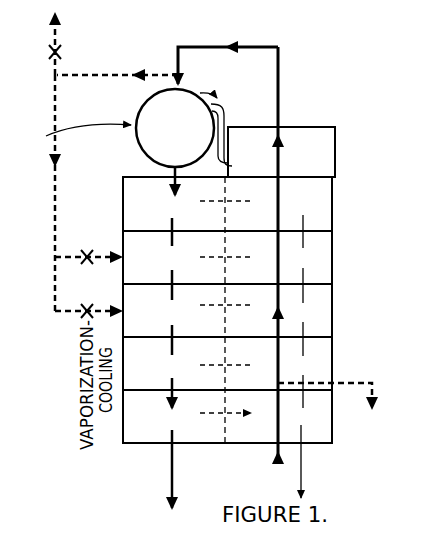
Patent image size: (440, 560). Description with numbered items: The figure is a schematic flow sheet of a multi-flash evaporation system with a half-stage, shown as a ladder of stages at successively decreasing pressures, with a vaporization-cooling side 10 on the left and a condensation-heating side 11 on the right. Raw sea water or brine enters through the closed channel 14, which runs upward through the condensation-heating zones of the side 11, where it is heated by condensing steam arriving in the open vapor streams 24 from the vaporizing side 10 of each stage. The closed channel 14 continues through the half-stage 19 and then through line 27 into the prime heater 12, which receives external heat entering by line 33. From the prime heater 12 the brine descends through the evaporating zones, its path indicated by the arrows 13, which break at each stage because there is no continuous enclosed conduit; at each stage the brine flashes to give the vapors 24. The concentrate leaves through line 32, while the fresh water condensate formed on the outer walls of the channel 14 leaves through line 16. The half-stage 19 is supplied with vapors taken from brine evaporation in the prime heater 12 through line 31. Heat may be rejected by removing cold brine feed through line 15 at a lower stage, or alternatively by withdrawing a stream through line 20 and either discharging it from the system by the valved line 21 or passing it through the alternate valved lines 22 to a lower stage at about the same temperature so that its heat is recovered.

The vaporization-cooling side 10 is at (123, 214).
The condensation-heating side 11 is at (331, 202).
The prime heater 12 is at (143, 128).
The descending brine arrows 13 is at (193, 185).
The closed brine channel 14 is at (278, 265).
The cold brine removal line 15 is at (374, 383).
The fresh water out line 16 is at (303, 230).
The half-stage 19 is at (334, 157).
The withdrawal line 20 is at (75, 75).
The valved heat reject line 21 is at (61, 38).
The alternate valved lines 22 is at (71, 260).
The vapor streams 24 is at (214, 198).
The brine line to prime heater 27 is at (216, 47).
The vapor line to half-stage 31 is at (223, 113).
The concentrate outlet line 32 is at (174, 487).
The external heat supply line 33 is at (76, 193).